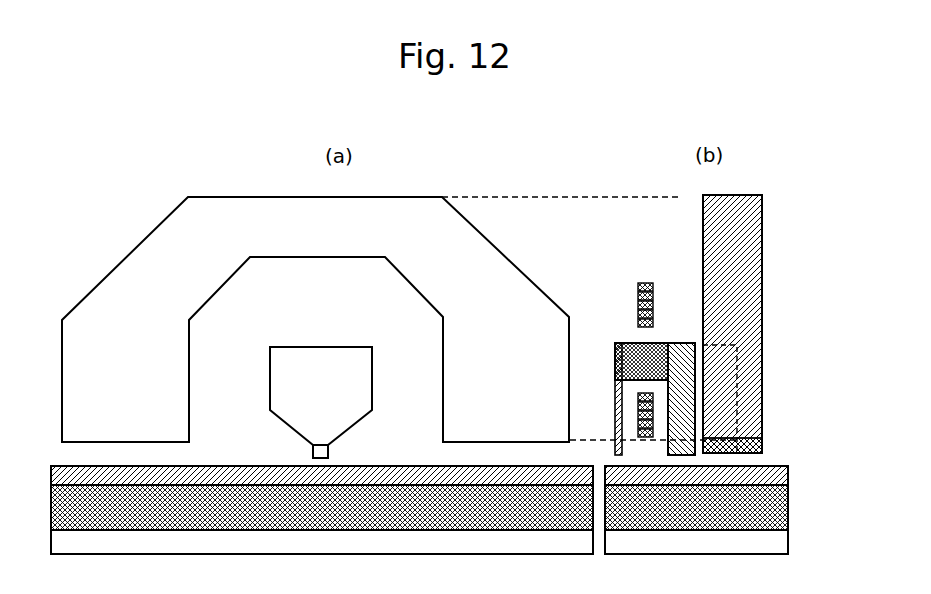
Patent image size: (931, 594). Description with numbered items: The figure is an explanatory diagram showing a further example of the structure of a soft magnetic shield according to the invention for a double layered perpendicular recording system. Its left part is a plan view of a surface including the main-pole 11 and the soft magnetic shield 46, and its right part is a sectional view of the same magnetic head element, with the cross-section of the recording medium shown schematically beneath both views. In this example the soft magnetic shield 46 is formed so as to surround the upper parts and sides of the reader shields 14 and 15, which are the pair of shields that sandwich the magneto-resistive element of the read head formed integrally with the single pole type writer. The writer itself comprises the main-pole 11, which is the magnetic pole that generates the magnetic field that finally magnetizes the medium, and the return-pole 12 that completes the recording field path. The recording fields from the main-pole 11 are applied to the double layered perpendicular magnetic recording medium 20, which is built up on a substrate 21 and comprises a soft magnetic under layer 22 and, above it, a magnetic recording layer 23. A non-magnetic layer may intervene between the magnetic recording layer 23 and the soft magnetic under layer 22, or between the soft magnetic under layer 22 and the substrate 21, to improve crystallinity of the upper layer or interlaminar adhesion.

The soft magnetic shield 46 is at (163, 247).
The main-pole 11 is at (342, 425).
The return-pole 12 is at (680, 343).
The reader shield 15 is at (727, 393).
The reader shield 14 is at (762, 449).
The double layered perpendicular magnetic recording medium 20 is at (464, 508).
The substrate 21 is at (443, 540).
The soft magnetic under layer 22 is at (770, 504).
The magnetic recording layer 23 is at (770, 472).